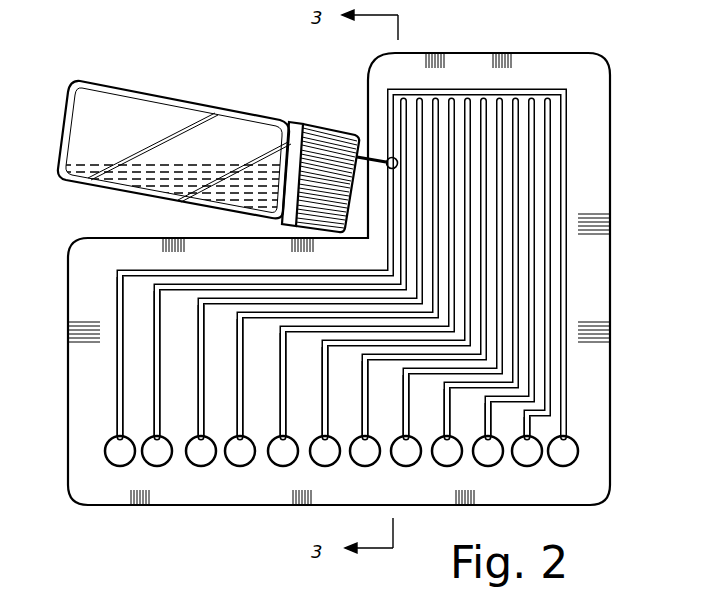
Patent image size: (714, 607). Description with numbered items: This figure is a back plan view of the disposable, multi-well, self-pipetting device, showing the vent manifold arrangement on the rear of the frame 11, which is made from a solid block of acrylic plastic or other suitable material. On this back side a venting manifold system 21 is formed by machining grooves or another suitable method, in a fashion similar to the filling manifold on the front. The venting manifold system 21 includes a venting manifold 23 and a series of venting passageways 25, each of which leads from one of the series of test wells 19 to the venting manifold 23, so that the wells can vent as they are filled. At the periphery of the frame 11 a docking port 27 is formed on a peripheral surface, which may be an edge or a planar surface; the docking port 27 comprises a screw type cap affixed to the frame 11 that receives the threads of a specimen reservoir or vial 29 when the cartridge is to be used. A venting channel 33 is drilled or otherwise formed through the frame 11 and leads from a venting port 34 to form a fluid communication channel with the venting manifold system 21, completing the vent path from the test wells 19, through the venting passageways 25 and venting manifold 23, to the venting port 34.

The frame 11 is at (62, 320).
The test wells 19 is at (125, 456).
The venting manifold system 21 is at (578, 114).
The venting manifold 23 is at (486, 80).
The venting passageways 25 is at (122, 397).
The docking port 27 is at (329, 136).
The specimen vial 29 is at (191, 104).
The venting channel 33 is at (374, 156).
The venting port 34 is at (368, 166).